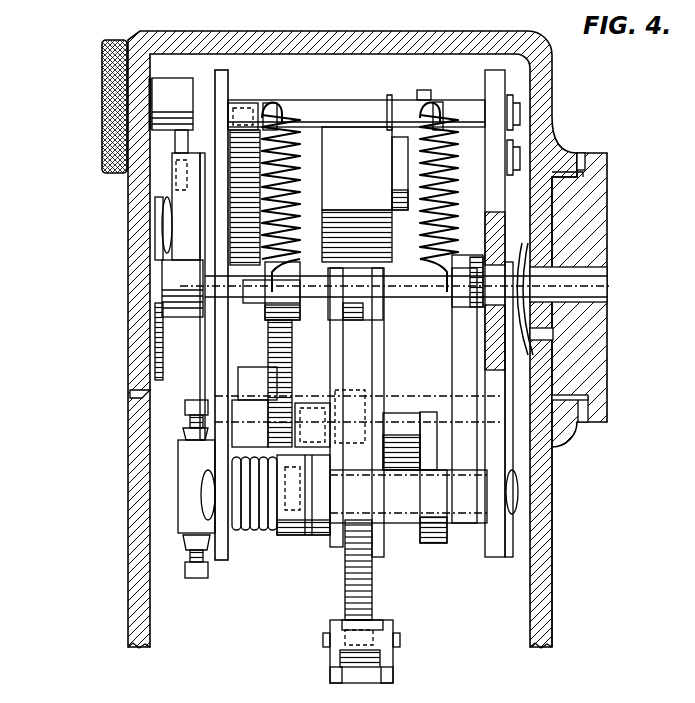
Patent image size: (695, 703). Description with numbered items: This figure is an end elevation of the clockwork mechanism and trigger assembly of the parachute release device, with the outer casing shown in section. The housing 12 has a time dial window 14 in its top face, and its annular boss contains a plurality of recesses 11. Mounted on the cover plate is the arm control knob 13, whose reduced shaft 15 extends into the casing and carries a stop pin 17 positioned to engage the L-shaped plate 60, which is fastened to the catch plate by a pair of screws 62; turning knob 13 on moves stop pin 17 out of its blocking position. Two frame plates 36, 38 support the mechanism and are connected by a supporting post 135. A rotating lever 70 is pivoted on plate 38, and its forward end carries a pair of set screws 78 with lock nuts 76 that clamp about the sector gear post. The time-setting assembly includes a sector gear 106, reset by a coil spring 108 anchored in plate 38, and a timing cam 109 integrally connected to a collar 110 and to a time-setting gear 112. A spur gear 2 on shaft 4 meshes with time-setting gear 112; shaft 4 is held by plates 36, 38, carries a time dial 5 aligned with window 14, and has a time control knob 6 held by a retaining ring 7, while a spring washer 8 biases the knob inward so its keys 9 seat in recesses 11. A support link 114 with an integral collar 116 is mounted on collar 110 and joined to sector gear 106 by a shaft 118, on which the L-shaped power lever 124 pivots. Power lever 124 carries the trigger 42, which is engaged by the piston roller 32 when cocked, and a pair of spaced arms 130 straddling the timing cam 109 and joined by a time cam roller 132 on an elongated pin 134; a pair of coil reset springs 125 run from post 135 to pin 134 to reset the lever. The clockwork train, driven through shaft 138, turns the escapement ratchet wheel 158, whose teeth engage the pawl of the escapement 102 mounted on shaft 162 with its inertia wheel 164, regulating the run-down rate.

The spur gear 2 is at (470, 256).
The shaft 4 is at (395, 274).
The time dial 5 is at (163, 205).
The time control knob 6 is at (607, 207).
The retaining ring 7 is at (510, 325).
The spring washer 8 is at (553, 338).
The keys 9 is at (582, 422).
The recesses 11 is at (583, 153).
The housing 12 is at (553, 617).
The arm control knob 13 is at (100, 88).
The time dial window 14 is at (128, 300).
The reduced shaft 15 is at (182, 80).
The stop pin 17 is at (178, 137).
The pivoted roller 32 is at (365, 670).
The plate 36 is at (500, 85).
The plate 38 is at (218, 88).
The trigger 42 is at (346, 597).
The L-shaped plate 60 is at (176, 167).
The screws 62 is at (163, 234).
The rotating lever 70 is at (182, 460).
The lock nuts 76 is at (184, 546).
The set screws 78 is at (193, 400).
The escapement 102 is at (385, 100).
The sector gear 106 is at (310, 535).
The coil spring 108 is at (262, 533).
The timing cam 109 is at (363, 343).
The collar 110 is at (400, 528).
The time-setting gear 112 is at (452, 337).
The support link 114 is at (430, 412).
The collar 116 is at (440, 540).
The shaft 118 is at (390, 428).
The power lever 124 is at (382, 557).
The coil reset springs 125 is at (280, 137).
The spaced arms 130 is at (376, 262).
The time cam roller 132 is at (357, 312).
The elongated pin 134 is at (250, 307).
The supporting post 135 is at (252, 103).
The shaft 138 is at (188, 503).
The escapement ratchet wheel 158 is at (422, 90).
The shaft 162 is at (470, 162).
The inertia wheel 164 is at (368, 169).